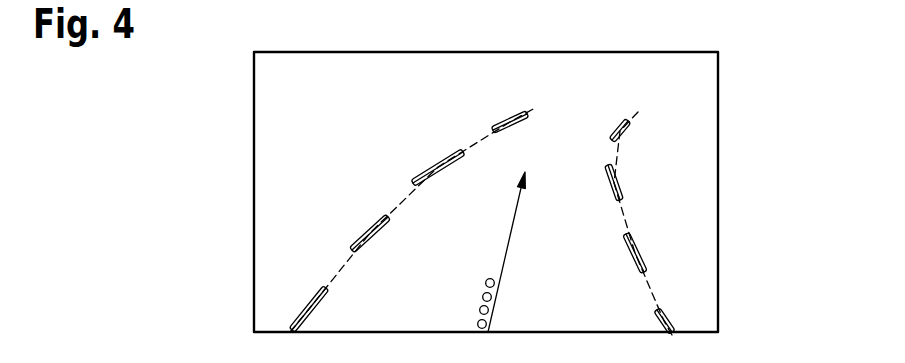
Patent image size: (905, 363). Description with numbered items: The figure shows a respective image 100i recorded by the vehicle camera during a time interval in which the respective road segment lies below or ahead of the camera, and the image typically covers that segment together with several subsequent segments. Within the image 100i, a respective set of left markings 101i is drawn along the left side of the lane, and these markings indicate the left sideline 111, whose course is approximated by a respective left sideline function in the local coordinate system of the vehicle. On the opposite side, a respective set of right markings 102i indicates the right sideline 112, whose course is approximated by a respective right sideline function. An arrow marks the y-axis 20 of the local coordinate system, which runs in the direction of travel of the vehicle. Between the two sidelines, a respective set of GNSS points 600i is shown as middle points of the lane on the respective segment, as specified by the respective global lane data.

The respective image 100i is at (718, 173).
The respective set of left markings 101i is at (498, 122).
The respective set of right markings 102i is at (615, 177).
The left sideline 111 is at (406, 194).
The right sideline 112 is at (623, 222).
The y-axis 20 is at (513, 223).
The respective set of GNSS points 600i is at (480, 275).